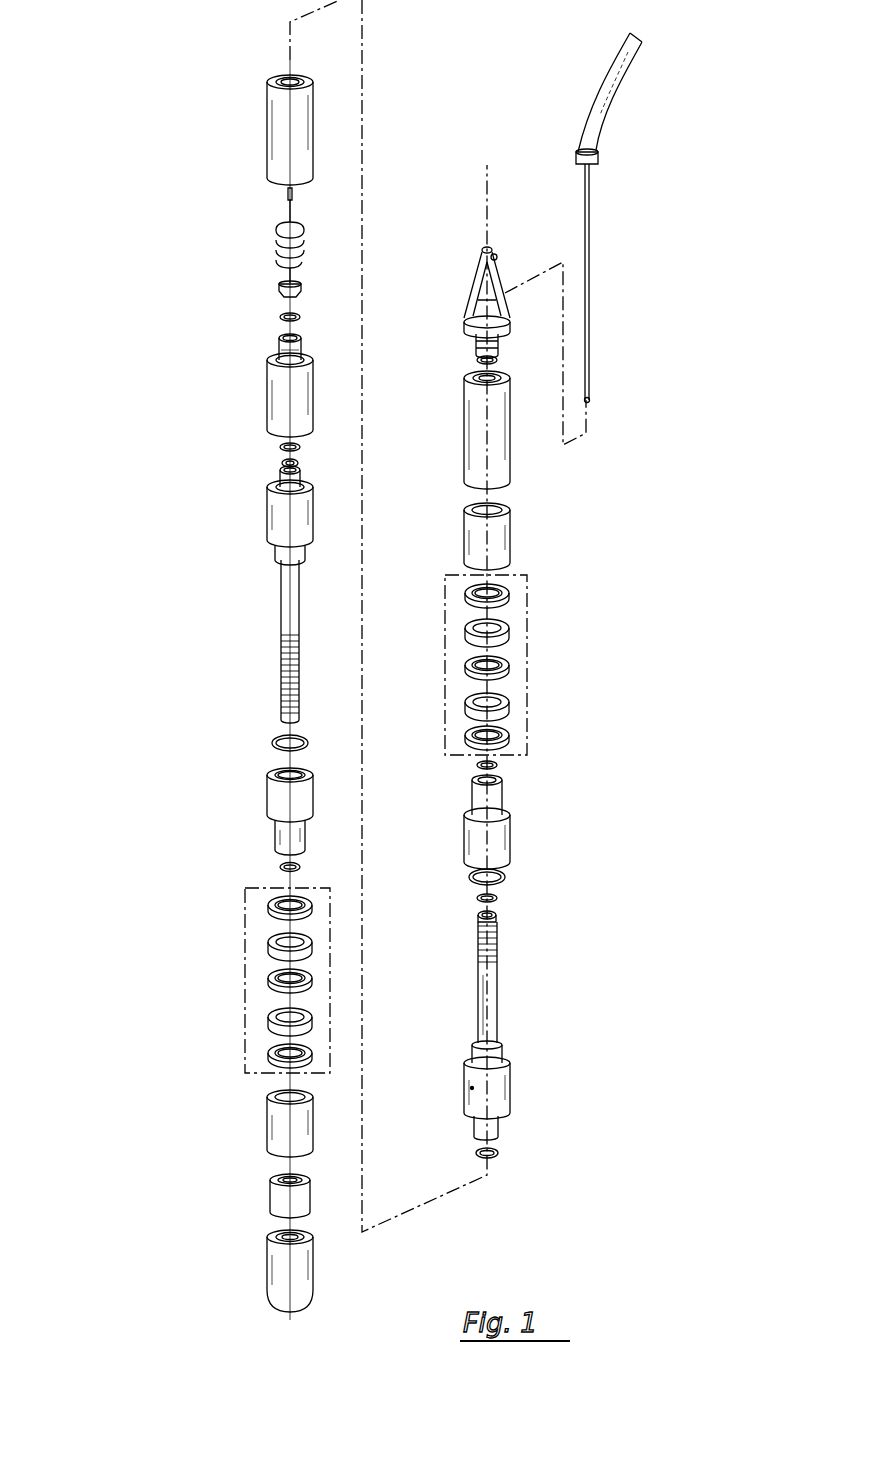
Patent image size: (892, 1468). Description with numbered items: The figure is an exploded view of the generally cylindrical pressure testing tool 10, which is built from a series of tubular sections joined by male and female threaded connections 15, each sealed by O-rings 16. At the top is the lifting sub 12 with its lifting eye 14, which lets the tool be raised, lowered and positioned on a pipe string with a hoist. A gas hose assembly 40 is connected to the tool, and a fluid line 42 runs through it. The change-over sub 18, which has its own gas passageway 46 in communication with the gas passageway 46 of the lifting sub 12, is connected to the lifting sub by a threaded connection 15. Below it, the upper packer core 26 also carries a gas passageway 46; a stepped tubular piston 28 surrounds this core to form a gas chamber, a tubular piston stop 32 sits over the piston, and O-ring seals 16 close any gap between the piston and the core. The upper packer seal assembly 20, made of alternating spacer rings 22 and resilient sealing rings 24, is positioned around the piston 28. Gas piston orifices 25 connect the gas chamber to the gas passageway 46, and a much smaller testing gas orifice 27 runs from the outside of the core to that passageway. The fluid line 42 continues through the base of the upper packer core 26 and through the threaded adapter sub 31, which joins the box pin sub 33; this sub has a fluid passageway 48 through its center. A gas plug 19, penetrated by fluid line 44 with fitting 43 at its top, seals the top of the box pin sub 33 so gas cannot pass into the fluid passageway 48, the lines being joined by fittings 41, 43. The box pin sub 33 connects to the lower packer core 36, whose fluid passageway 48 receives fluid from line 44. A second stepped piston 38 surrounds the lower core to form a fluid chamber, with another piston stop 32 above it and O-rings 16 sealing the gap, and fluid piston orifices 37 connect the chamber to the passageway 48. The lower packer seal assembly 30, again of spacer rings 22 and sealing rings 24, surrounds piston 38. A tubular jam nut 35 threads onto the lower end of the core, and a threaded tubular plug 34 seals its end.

The pressure testing tool 10 is at (192, 229).
The lifting sub 12 is at (478, 282).
The lifting eye 14 is at (498, 257).
The threaded connection 15 is at (280, 355).
The O-ring 16 is at (279, 316).
The change-over sub 18 is at (475, 425).
The gas plug 19 is at (279, 286).
The upper packer seal assembly 20 is at (528, 655).
The spacer ring 22 is at (268, 910).
The resilient sealing ring 24 is at (268, 948).
The gas piston orifice 25 is at (472, 1045).
The upper packer core 26 is at (500, 1098).
The testing gas orifice 27 is at (470, 1088).
The piston 28 is at (503, 836).
The lower packer seal assembly 30 is at (322, 888).
The adapter sub 31 is at (280, 118).
The piston stop 32 is at (275, 1120).
The box pin sub 33 is at (280, 390).
The threaded tubular plug 34 is at (275, 1262).
The jam nut 35 is at (275, 1195).
The lower packer core 36 is at (275, 512).
The fluid piston orifice 37 is at (281, 568).
The piston 38 is at (275, 802).
The gas hose assembly 40 is at (615, 105).
The fitting 41 is at (592, 400).
The fluid line 42 is at (590, 305).
The fitting 43 is at (286, 193).
The fluid line 44 is at (275, 248).
The gas passageway 46 is at (478, 914).
The fluid passageway 48 is at (282, 462).